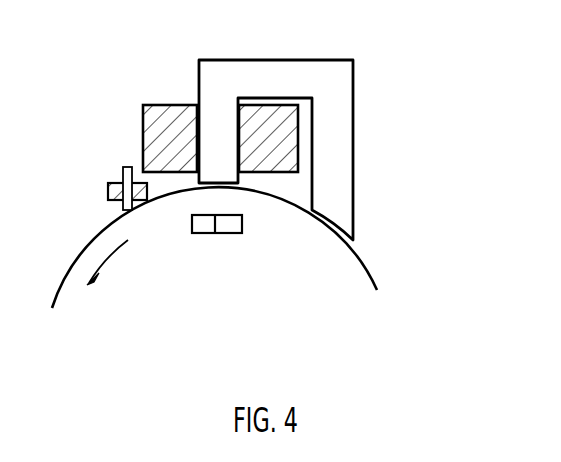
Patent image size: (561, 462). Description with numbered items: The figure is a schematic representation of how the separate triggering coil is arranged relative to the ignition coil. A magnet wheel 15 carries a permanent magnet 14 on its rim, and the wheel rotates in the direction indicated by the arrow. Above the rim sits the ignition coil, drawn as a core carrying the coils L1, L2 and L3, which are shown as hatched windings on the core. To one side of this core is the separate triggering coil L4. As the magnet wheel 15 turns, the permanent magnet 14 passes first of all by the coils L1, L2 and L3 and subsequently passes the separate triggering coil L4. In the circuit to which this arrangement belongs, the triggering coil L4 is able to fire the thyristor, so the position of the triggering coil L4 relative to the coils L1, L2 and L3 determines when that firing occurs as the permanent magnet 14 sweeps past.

The coil L1 is at (170, 111).
The coil L2 is at (170, 138).
The coil L3 is at (268, 138).
The triggering coil L4 is at (108, 193).
The permanent magnet 14 is at (213, 234).
The magnet wheel 15 is at (362, 282).